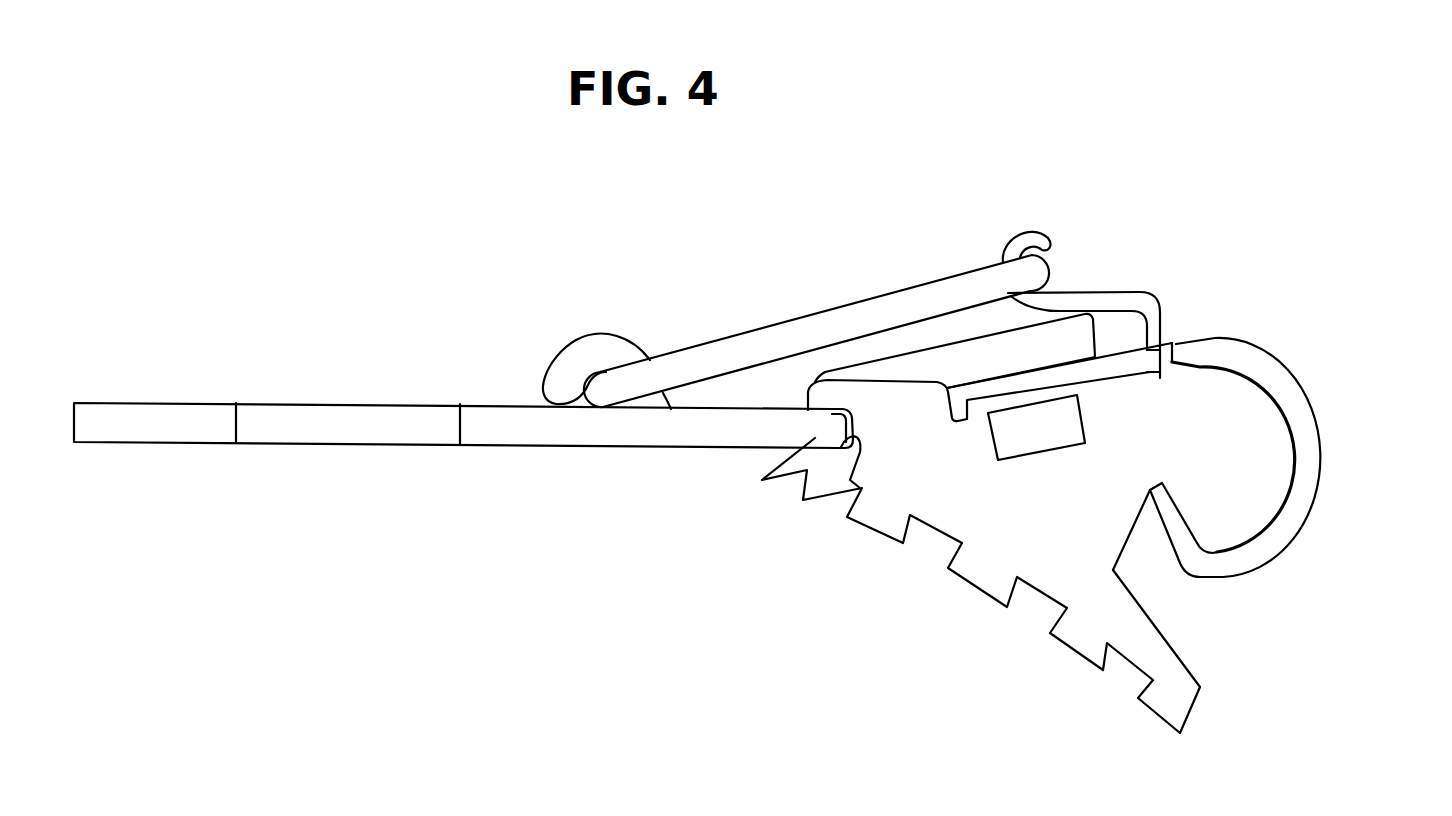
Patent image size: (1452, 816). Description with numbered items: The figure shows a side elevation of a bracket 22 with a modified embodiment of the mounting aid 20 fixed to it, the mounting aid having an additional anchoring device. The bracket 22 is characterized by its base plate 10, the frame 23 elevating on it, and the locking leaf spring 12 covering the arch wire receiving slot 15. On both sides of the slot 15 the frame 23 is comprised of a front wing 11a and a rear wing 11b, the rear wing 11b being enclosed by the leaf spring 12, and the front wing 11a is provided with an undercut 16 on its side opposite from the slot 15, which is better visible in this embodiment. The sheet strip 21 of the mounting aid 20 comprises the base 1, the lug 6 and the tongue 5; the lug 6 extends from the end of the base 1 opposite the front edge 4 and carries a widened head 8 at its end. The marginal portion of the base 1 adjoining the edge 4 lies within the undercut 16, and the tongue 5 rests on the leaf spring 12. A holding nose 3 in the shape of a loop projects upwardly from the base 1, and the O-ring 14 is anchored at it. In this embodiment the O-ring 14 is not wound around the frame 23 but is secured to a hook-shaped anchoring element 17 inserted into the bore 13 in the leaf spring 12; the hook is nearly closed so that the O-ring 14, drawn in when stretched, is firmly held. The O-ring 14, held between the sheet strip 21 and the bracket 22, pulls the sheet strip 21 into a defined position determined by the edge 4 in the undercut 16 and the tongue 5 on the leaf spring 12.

The base 1 is at (676, 438).
The holding nose 3 is at (582, 347).
The front edge 4 is at (853, 465).
The tongue 5 is at (968, 352).
The lug 6 is at (363, 436).
The widened head 8 is at (123, 432).
The base plate 10 is at (887, 520).
The front wing 11a is at (897, 395).
The rear wing 11b is at (1232, 485).
The locking leaf spring 12 is at (1225, 343).
The bore 13 is at (1162, 340).
The O-ring 14 is at (832, 315).
The arch wire receiving slot 15 is at (1043, 430).
The undercut 16 is at (835, 425).
The anchoring element 17 is at (1115, 305).
The mounting aid 20 is at (664, 235).
The sheet strip 21 is at (250, 418).
The bracket 22 is at (1190, 655).
The frame 23 is at (1148, 450).